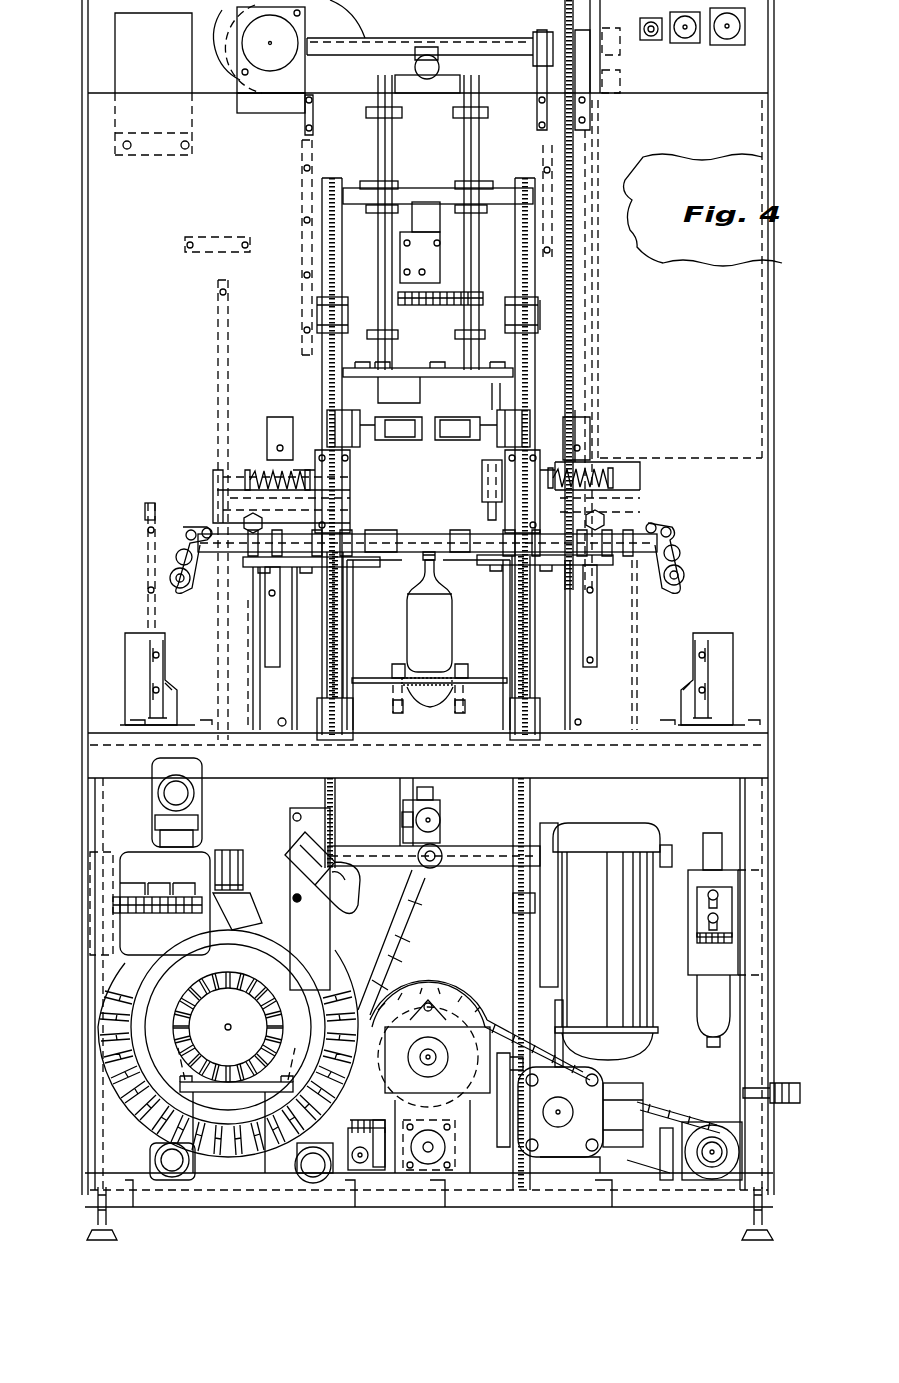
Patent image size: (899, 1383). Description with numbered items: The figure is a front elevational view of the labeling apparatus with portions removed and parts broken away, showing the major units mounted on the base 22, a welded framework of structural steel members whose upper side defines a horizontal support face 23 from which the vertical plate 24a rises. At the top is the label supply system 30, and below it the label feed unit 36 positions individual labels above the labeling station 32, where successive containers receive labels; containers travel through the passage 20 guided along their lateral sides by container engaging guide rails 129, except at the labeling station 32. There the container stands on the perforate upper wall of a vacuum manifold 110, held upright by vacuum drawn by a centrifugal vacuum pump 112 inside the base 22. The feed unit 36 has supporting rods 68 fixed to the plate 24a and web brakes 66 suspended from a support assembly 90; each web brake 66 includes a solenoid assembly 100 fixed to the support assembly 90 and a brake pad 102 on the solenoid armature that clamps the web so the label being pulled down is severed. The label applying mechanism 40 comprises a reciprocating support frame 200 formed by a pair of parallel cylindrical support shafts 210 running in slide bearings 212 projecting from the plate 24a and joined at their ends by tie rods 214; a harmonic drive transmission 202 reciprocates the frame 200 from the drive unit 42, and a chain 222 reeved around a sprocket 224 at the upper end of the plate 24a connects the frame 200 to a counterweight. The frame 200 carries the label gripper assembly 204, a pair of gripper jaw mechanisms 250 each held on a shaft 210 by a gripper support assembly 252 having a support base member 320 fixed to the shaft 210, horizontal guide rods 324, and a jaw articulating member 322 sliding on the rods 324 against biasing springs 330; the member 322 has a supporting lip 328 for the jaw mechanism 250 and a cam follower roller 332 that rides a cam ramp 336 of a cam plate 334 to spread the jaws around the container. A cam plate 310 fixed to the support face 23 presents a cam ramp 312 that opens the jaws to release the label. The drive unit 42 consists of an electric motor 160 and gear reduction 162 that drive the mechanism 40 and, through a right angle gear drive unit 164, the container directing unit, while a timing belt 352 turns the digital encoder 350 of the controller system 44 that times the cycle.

The passage 20 is at (448, 500).
The base 22 is at (753, 830).
The horizontal support face 23 is at (250, 700).
The vertical plate 24a is at (164, 343).
The label supply system 30 is at (462, 32).
The labeling station 32 is at (402, 630).
The label feed unit 36 is at (562, 325).
The label applying mechanism 40 is at (732, 535).
The drive unit 42 is at (680, 1040).
The controller system 44 is at (686, 130).
The web brakes 66 is at (335, 425).
The supporting rods 68 is at (380, 245).
The support assembly 90 is at (405, 372).
The solenoid assembly 100 is at (300, 443).
The brake pad 102 is at (355, 448).
The vacuum manifold 110 is at (450, 695).
The centrifugal vacuum pump 112 is at (160, 1047).
The container engaging guide rails 129 is at (400, 665).
The electric motor 160 is at (604, 927).
The gear reduction 162 is at (562, 1145).
The right angle gear drive unit 164 is at (712, 1147).
The reciprocating support frame 200 is at (470, 878).
The harmonic drive transmission 202 is at (438, 993).
The label gripper assembly 204 is at (660, 517).
The cylindrical support shafts 210 is at (346, 600).
The slide bearings 212 is at (320, 315).
The tie rods 214 is at (418, 192).
The chain 222 is at (572, 162).
The sprocket 224 is at (565, 12).
The gripper jaw mechanisms 250 is at (397, 531).
The gripper support assembly 252 is at (357, 480).
The cam plate 310 is at (150, 672).
The cam ramp 312 is at (172, 684).
The support base member 320 is at (252, 470).
The jaw articulating member 322 is at (340, 496).
The guide rods 324 is at (603, 458).
The supporting lip 328 is at (567, 566).
The biasing springs 330 is at (240, 480).
The cam follower roller 332 is at (238, 512).
The cam plate 334 is at (275, 612).
The cam ramp 336 is at (225, 483).
The digital encoder 350 is at (428, 1165).
The timing belt 352 is at (372, 1175).